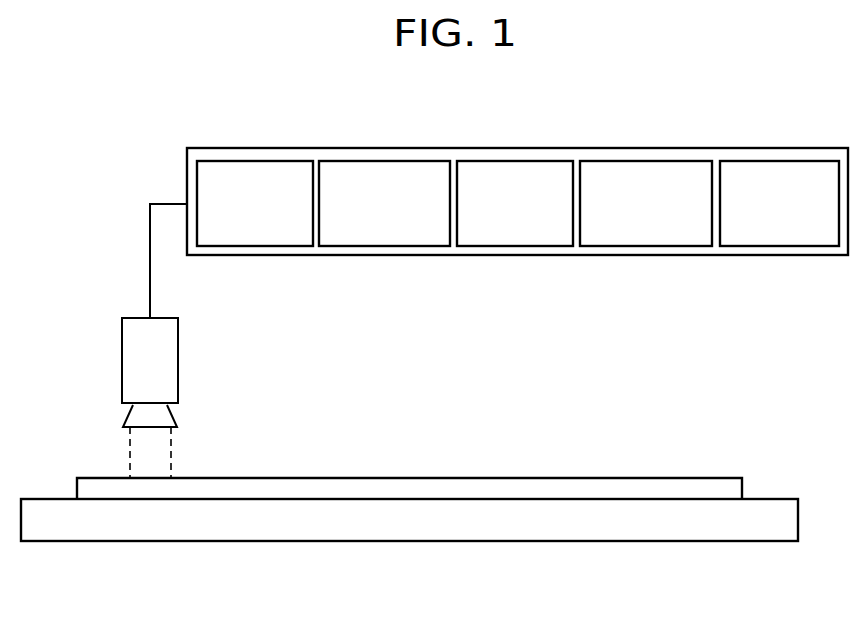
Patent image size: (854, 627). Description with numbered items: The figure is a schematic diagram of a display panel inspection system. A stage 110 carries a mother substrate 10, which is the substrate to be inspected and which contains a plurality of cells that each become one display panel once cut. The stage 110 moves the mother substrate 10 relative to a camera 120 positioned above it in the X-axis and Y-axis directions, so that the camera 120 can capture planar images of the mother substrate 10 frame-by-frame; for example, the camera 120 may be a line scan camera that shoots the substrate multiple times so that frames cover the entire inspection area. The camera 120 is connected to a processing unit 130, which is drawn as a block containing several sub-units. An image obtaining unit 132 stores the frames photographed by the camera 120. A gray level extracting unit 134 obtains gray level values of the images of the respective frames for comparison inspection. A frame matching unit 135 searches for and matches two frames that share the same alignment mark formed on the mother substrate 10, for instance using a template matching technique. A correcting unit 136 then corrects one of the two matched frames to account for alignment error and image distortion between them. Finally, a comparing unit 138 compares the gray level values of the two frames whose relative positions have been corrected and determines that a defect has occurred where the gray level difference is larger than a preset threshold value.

The mother substrate 10 is at (410, 492).
The stage 110 is at (547, 530).
The camera 120 is at (179, 360).
The processing unit 130 is at (503, 147).
The image obtaining unit 132 is at (243, 247).
The gray level extracting unit 134 is at (365, 247).
The frame matching unit 135 is at (505, 247).
The correcting unit 136 is at (630, 247).
The comparing unit 138 is at (770, 247).